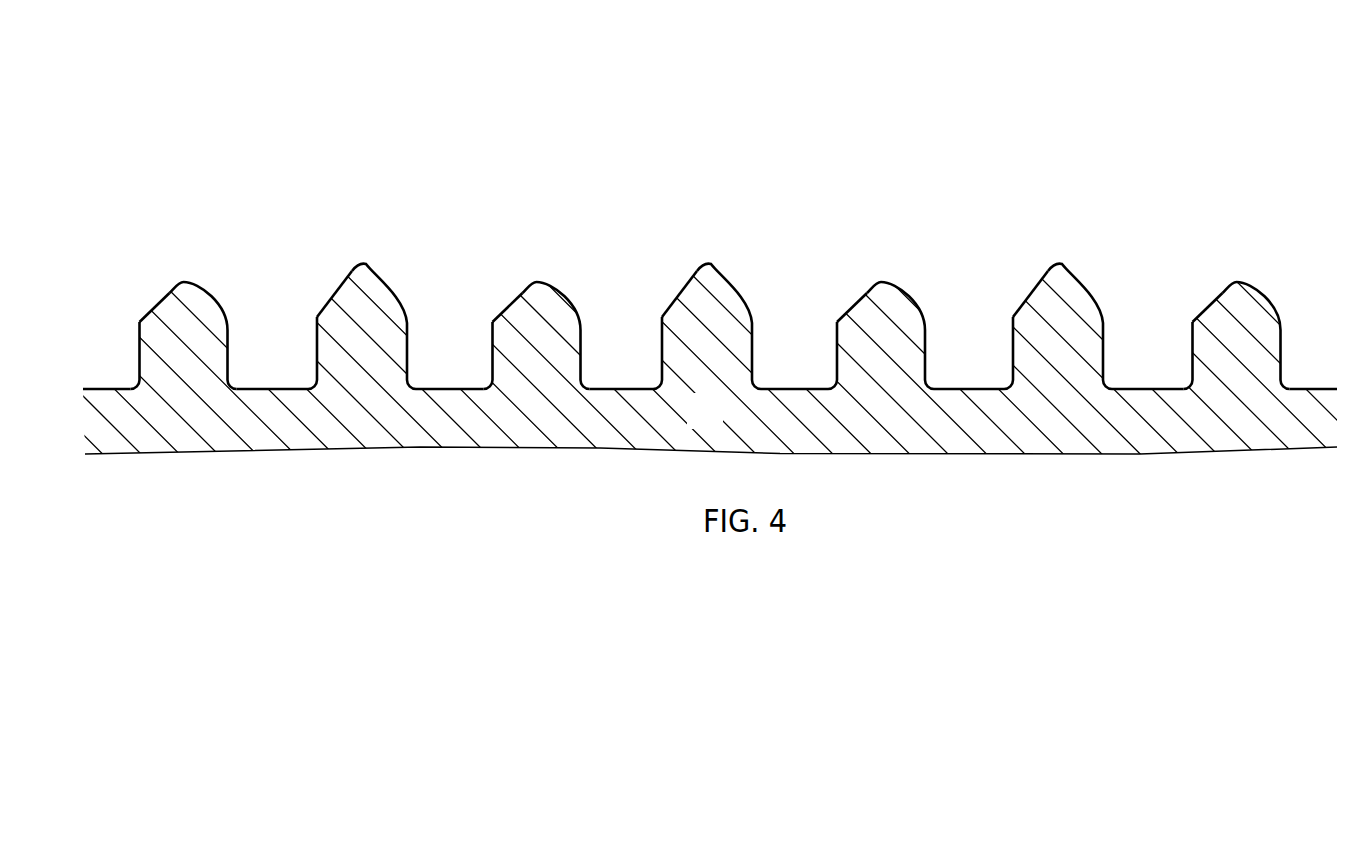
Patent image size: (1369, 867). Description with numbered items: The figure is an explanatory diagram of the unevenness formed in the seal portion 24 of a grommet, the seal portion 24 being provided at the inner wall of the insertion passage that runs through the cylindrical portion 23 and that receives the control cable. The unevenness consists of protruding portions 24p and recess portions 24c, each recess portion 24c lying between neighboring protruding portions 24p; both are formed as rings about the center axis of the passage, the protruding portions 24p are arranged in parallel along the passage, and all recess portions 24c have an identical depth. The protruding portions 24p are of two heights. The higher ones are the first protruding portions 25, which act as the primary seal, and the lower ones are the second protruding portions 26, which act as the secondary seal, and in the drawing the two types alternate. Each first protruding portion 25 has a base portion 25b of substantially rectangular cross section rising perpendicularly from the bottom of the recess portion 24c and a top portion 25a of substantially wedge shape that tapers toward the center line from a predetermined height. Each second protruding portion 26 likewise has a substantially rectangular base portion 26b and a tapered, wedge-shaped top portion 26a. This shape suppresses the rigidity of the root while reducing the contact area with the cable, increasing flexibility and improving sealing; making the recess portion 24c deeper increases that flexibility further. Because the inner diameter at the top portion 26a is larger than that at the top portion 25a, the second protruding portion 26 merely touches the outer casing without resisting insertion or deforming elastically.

The cylindrical portion 23 is at (716, 424).
The seal portion 24 is at (117, 105).
The protruding portions 24p is at (187, 267).
The recess portions 24c is at (112, 382).
The first protruding portion 25 is at (682, 273).
The top portion 25a is at (333, 288).
The base portion 25b is at (317, 332).
The second protruding portion 26 is at (683, 283).
The top portion 26a is at (160, 302).
The base portion 26b is at (139, 340).